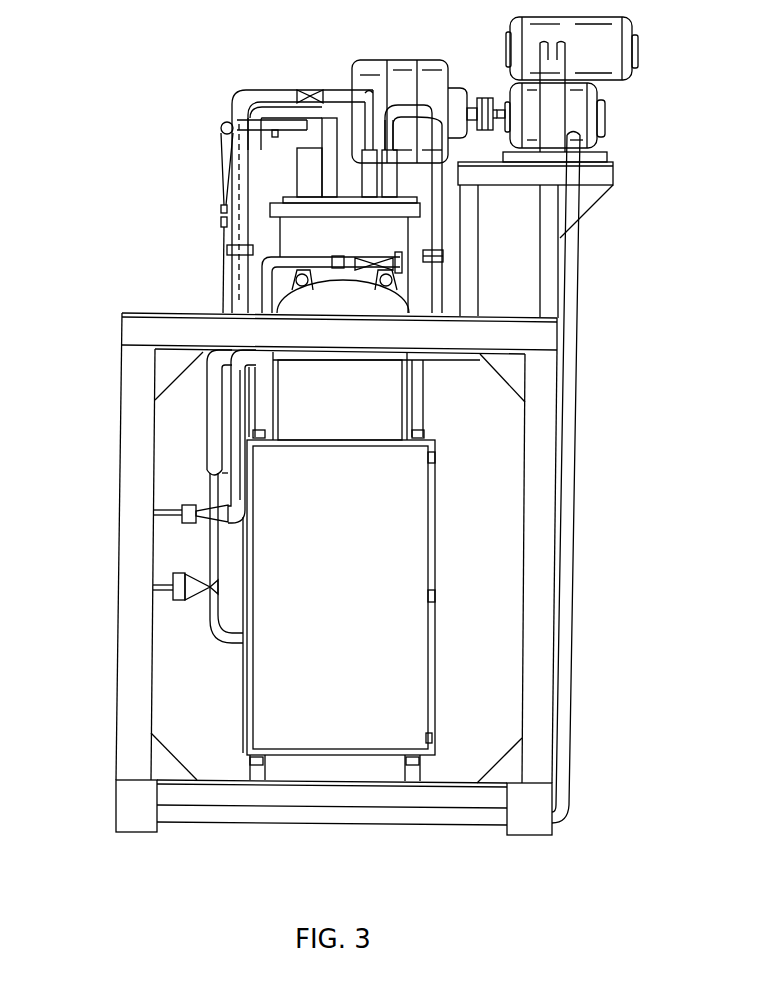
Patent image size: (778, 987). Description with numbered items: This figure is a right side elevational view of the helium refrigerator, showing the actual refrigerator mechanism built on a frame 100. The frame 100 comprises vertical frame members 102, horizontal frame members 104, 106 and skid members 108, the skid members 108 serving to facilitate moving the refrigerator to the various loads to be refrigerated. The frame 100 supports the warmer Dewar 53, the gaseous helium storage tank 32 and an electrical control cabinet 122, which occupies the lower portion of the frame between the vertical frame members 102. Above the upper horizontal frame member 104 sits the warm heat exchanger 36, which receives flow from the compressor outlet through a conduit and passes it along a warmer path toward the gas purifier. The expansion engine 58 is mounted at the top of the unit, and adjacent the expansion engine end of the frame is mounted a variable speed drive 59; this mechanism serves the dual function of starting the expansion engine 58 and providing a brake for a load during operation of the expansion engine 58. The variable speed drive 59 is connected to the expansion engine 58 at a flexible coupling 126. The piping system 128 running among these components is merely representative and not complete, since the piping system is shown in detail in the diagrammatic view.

The frame 100 is at (118, 375).
The vertical frame members 102 is at (142, 627).
The horizontal frame member 104 is at (492, 330).
The horizontal frame member 106 is at (430, 800).
The skid members 108 is at (140, 808).
The electrical control cabinet 122 is at (403, 552).
The flexible coupling 126 is at (485, 100).
The piping system 128 is at (228, 92).
The gaseous helium storage tank 32 is at (370, 395).
The warm heat exchanger 36 is at (303, 233).
The warmer Dewar 53 is at (398, 237).
The expansion engine 58 is at (410, 72).
The variable speed drive 59 is at (602, 35).